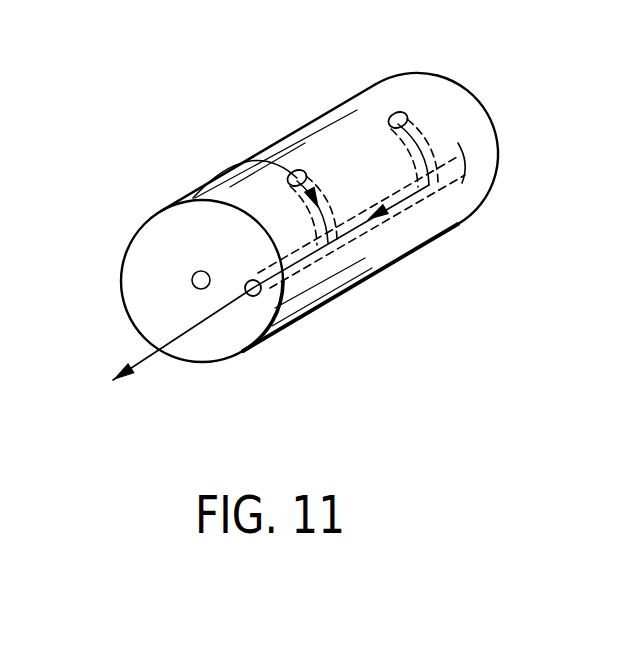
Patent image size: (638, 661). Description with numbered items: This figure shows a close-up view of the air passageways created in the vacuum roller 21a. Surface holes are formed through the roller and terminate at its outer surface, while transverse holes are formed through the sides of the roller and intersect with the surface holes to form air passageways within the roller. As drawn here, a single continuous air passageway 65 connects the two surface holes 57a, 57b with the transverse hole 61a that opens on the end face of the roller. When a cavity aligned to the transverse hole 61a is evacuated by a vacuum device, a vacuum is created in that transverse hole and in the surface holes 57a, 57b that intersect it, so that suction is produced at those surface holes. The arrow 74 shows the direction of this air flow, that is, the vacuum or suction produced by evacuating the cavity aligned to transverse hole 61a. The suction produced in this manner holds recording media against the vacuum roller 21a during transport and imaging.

The vacuum roller 21a is at (116, 136).
The arrow 74 is at (250, 160).
The surface hole 57a is at (299, 171).
The surface hole 57b is at (395, 112).
The transverse hole 61a is at (257, 297).
The air passageway 65 is at (447, 180).